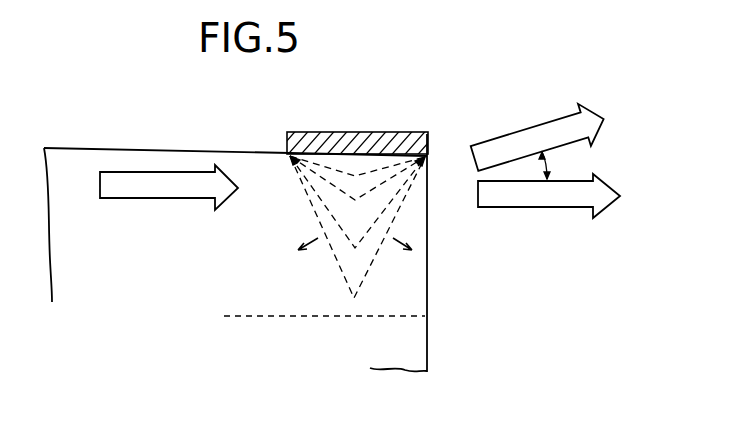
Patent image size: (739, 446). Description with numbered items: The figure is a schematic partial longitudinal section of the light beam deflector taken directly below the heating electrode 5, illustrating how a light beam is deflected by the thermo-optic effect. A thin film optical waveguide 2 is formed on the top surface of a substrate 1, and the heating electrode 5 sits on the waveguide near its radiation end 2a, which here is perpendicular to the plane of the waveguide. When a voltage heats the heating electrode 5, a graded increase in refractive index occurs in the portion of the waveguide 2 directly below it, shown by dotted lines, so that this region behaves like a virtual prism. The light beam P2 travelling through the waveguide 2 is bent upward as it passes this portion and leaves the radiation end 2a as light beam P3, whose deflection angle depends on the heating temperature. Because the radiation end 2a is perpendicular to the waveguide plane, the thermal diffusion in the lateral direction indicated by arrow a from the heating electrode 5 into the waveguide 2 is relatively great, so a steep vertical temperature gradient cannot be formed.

The substrate 1 is at (427, 337).
The thin film optical waveguide 2 is at (118, 148).
The radiation end 2a is at (428, 238).
The heating electrode 5 is at (318, 132).
The arrow indicating lateral thermal diffusion a is at (357, 227).
The light beam P2 is at (165, 200).
The light beam P3 is at (602, 128).